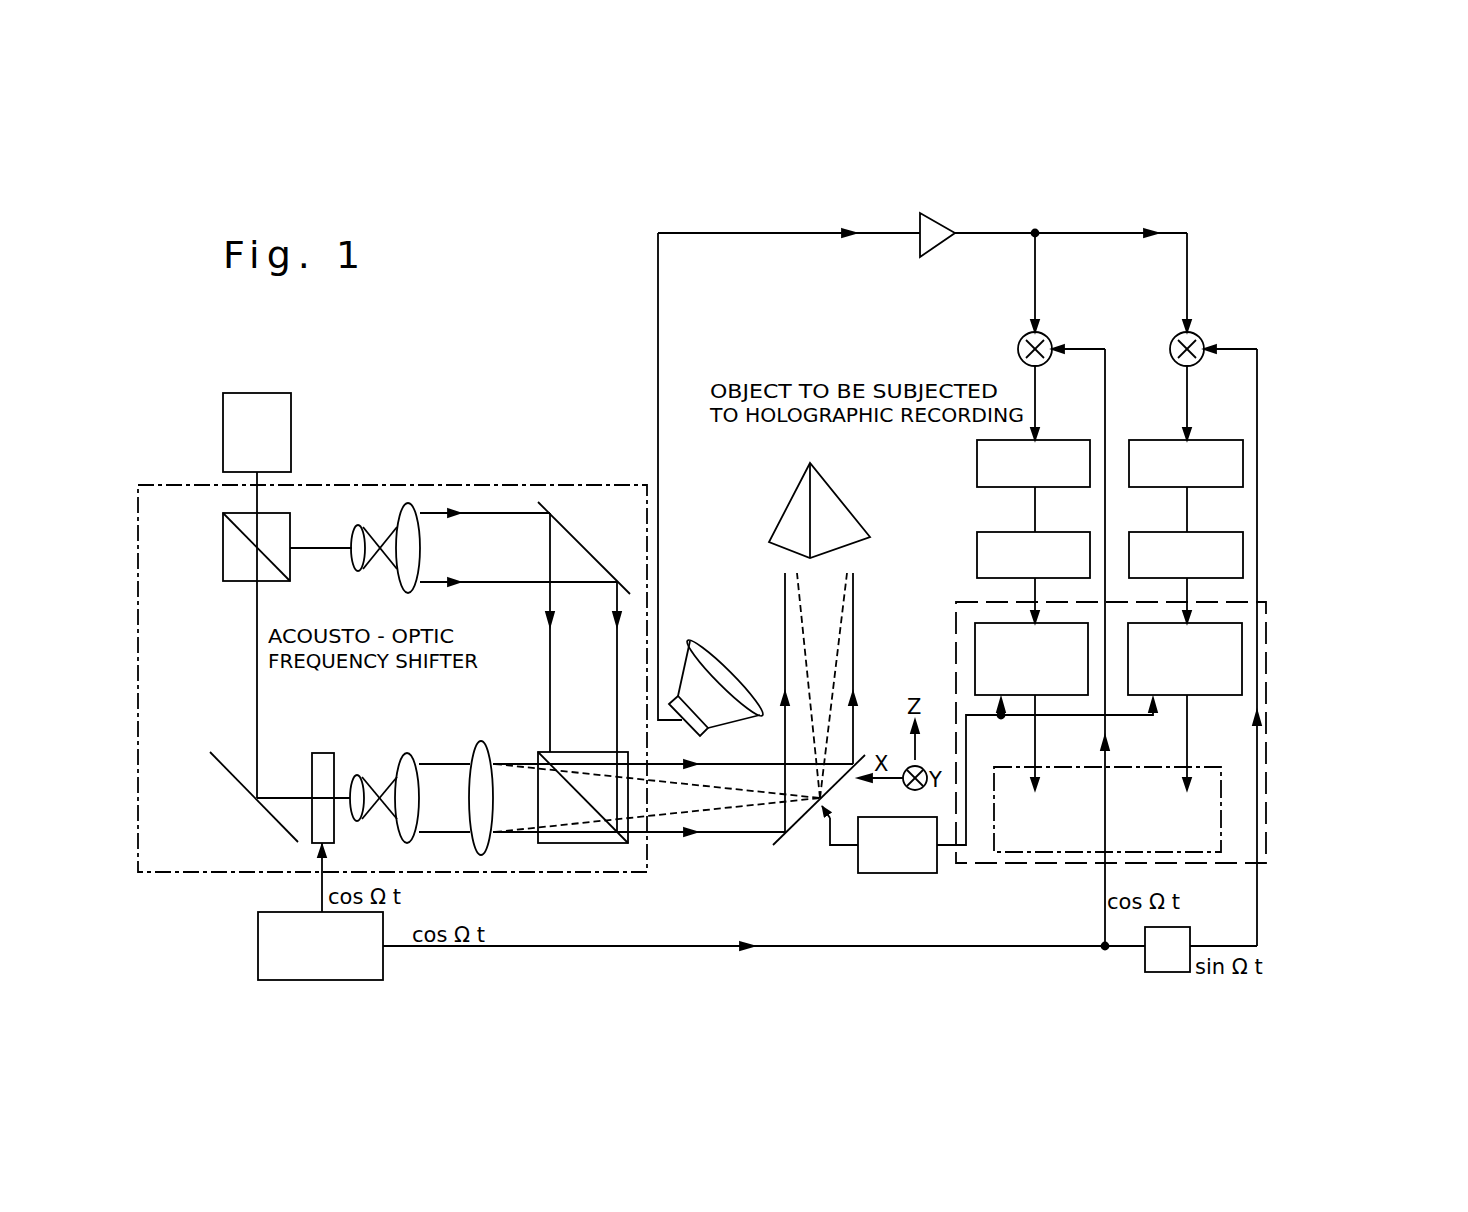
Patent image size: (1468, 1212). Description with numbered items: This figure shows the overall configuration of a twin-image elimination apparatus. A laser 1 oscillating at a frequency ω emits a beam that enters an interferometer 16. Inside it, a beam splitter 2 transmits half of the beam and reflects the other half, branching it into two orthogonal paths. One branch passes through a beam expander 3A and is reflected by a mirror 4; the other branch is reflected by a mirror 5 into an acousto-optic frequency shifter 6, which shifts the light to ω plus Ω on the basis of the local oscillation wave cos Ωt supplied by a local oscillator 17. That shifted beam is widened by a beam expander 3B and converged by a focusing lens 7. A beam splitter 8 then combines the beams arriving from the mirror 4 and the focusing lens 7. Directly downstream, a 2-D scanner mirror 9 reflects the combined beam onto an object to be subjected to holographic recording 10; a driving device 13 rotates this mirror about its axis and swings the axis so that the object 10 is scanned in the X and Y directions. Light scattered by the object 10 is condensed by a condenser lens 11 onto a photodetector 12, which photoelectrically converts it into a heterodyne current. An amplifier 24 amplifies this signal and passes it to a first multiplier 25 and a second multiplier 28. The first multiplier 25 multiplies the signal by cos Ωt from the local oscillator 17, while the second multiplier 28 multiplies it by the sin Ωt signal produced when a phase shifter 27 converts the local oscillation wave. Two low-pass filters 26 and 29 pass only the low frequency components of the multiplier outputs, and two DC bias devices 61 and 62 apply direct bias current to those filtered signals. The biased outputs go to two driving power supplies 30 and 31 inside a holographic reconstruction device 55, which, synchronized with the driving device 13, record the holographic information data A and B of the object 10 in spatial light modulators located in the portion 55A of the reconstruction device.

The laser 1 is at (223, 435).
The beam splitter 2 is at (223, 550).
The beam expander 3A is at (385, 532).
The beam expander 3B is at (385, 782).
The mirror 4 is at (553, 515).
The mirror 5 is at (224, 768).
The acousto-optic frequency shifter 6 is at (324, 753).
The focusing lens 7 is at (484, 745).
The beam splitter 8 is at (580, 843).
The 2-D scanner mirror 9 is at (794, 832).
The object to be subjected to holographic recording 10 is at (843, 497).
The condenser lens 11 is at (710, 652).
The photodetector 12 is at (680, 695).
The driving device 13 is at (905, 873).
The interferometer 16 is at (452, 485).
The local oscillator 17 is at (258, 950).
The amplifier 24 is at (940, 218).
The first multiplier 25 is at (1048, 335).
The low-pass filter 26 is at (977, 468).
The phase shifter 27 is at (1145, 968).
The second multiplier 28 is at (1200, 335).
The low-pass filter 29 is at (1243, 462).
The driving power supply 30 is at (975, 660).
The driving power supply 31 is at (1242, 655).
The holographic reconstruction device 55 is at (1266, 707).
The portion of the holographic reconstruction device 55A is at (1221, 845).
The DC bias device 61 is at (977, 560).
The DC bias device 62 is at (1243, 557).